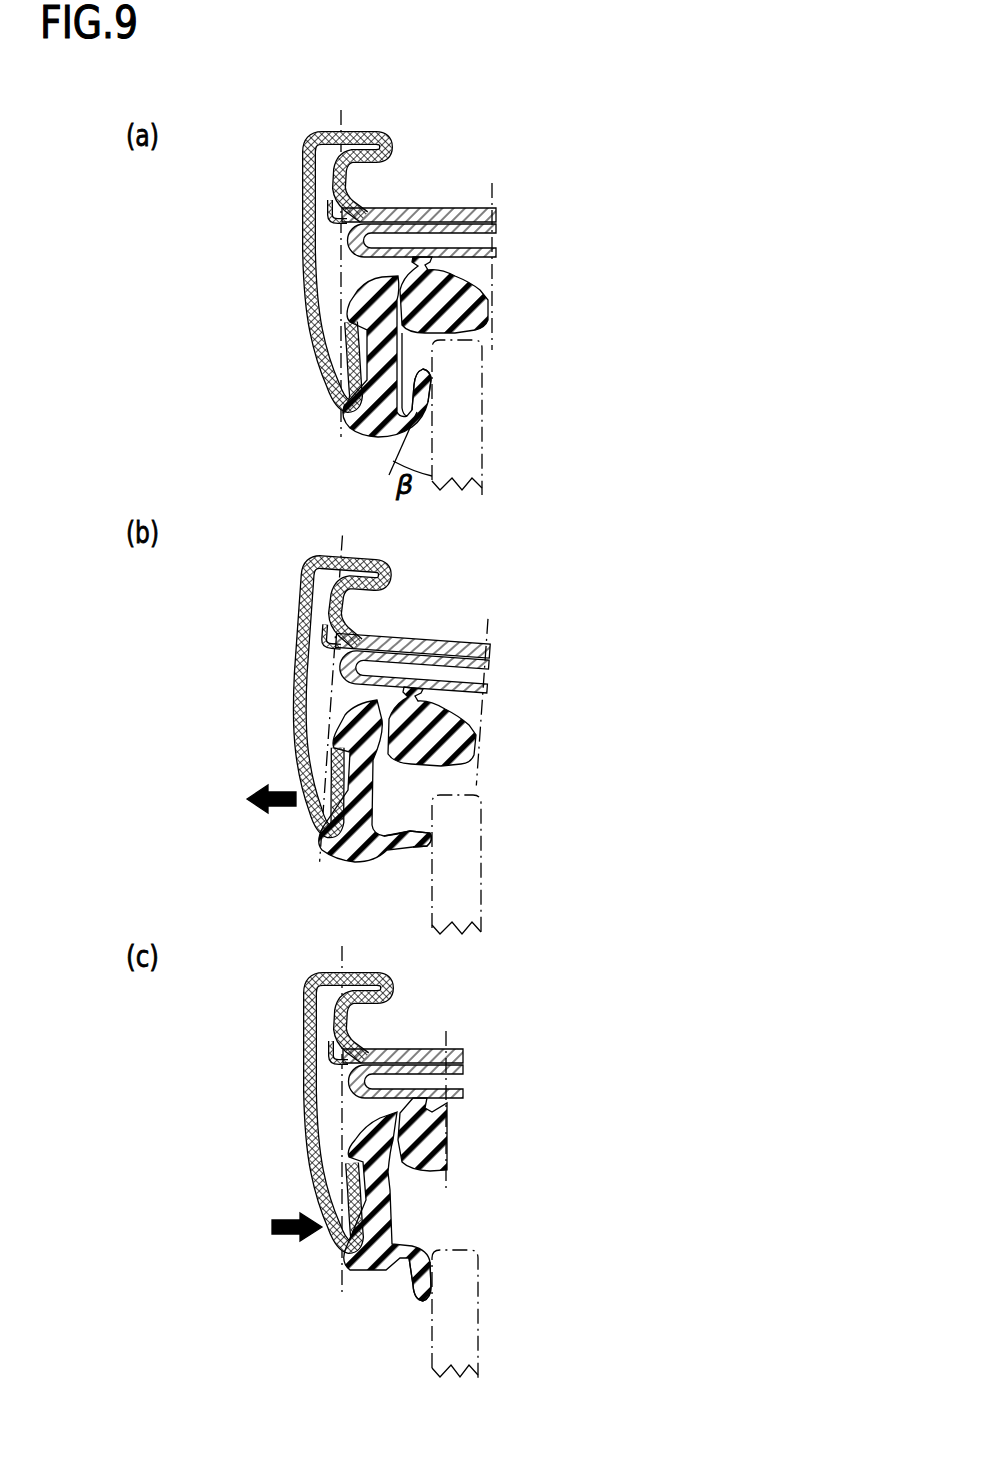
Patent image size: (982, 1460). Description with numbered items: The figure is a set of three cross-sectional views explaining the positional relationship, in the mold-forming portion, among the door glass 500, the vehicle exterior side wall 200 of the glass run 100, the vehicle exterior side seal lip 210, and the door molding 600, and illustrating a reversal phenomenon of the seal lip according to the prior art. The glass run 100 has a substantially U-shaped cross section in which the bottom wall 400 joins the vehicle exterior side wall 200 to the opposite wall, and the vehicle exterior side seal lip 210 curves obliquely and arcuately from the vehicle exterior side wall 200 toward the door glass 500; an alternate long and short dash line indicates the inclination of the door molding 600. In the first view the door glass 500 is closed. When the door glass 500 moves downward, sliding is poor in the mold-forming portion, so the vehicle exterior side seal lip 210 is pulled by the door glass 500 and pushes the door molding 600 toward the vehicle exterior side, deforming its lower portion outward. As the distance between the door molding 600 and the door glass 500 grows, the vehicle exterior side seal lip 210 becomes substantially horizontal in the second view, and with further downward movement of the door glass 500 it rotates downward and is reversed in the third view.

The glass run 100 is at (484, 680).
The vehicle exterior side wall 200 is at (304, 788).
The vehicle exterior side seal lip 210 is at (510, 835).
The bottom wall 400 is at (512, 714).
The door glass 500 is at (534, 861).
The door molding 600 is at (282, 692).